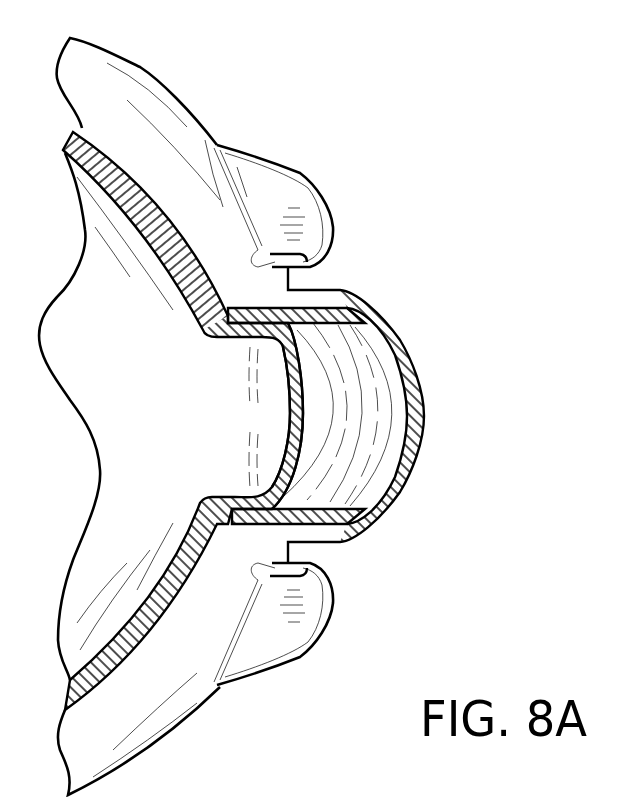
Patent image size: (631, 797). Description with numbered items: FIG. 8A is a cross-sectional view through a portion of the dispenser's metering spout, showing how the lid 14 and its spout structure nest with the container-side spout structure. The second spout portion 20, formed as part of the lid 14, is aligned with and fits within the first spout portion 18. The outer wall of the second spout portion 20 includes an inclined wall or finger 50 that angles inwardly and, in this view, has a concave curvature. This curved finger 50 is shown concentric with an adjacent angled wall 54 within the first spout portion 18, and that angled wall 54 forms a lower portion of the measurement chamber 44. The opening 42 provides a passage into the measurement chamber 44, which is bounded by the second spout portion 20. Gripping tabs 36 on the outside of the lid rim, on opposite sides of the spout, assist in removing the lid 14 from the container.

The lid 14 is at (120, 196).
The first spout portion 18 is at (390, 398).
The second spout portion 20 is at (295, 367).
The assembly gripping tabs 36 is at (312, 212).
The opening 42 is at (262, 426).
The measurement chamber 44 is at (373, 426).
The inclined wall or finger 50 is at (303, 396).
The angled wall 54 is at (422, 450).